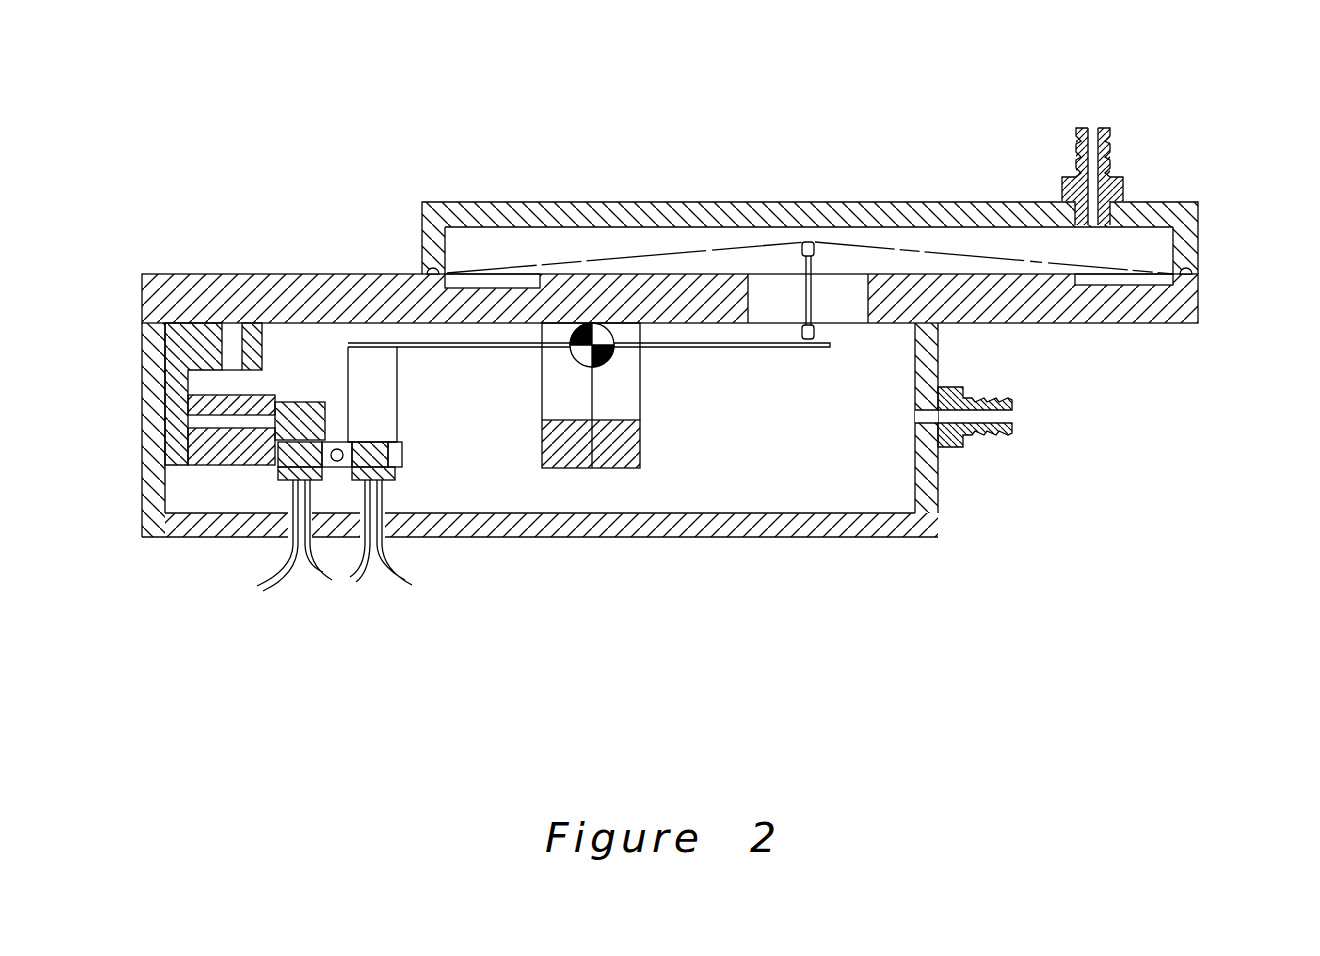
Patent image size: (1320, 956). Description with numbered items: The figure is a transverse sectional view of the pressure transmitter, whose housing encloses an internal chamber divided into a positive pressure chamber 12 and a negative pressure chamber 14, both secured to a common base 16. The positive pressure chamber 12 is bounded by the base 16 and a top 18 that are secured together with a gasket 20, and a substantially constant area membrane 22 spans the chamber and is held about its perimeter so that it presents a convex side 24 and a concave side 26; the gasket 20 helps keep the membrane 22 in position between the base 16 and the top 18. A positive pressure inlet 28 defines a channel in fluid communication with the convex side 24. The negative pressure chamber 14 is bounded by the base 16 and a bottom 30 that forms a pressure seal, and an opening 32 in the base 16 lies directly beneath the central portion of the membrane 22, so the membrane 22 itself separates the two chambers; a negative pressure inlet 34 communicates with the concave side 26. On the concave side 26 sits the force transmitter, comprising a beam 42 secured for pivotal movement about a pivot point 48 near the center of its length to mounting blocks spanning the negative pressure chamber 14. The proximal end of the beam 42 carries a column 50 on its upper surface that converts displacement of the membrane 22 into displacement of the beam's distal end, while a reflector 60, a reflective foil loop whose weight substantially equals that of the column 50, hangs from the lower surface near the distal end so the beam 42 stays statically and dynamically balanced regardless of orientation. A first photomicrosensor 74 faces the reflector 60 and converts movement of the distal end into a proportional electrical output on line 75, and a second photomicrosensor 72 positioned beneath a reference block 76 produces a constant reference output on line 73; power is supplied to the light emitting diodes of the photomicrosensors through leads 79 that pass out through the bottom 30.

The positive pressure chamber 12 is at (1133, 254).
The negative pressure chamber 14 is at (818, 478).
The base 16 is at (1167, 323).
The top 18 is at (650, 205).
The gasket 20 is at (426, 270).
The membrane 22 is at (922, 241).
The convex side 24 is at (522, 243).
The concave side 26 is at (920, 258).
The positive pressure inlet 28 is at (1062, 140).
The bottom 30 is at (188, 540).
The opening 32 is at (843, 300).
The negative pressure inlet 34 is at (1015, 423).
The beam 42 is at (705, 347).
The pivot point 48 is at (613, 362).
The column 50 is at (812, 297).
The reflector 60 is at (388, 396).
The second photomicrosensor 72 is at (275, 478).
The line 73 is at (318, 580).
The first photomicrosensor 74 is at (390, 480).
The line 75 is at (410, 585).
The reference block 76 is at (292, 397).
The leads 79 is at (268, 583).